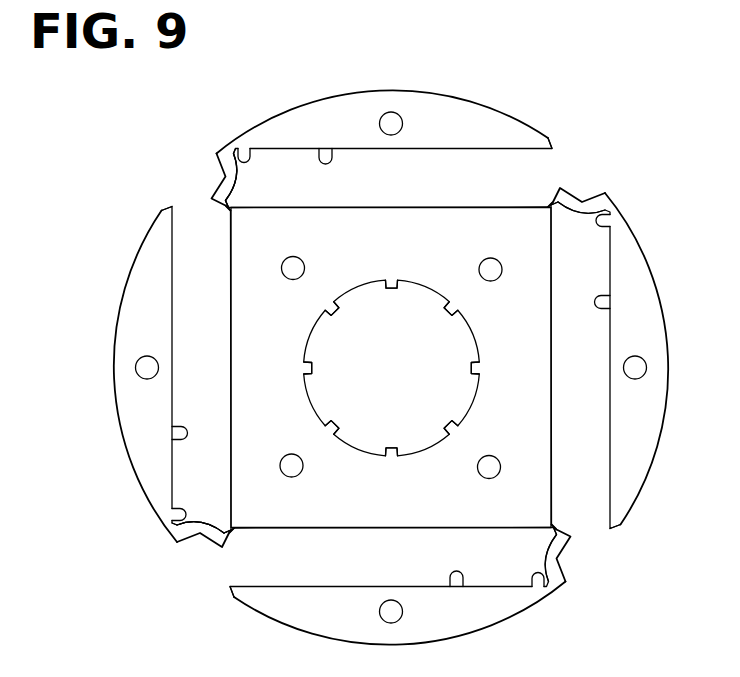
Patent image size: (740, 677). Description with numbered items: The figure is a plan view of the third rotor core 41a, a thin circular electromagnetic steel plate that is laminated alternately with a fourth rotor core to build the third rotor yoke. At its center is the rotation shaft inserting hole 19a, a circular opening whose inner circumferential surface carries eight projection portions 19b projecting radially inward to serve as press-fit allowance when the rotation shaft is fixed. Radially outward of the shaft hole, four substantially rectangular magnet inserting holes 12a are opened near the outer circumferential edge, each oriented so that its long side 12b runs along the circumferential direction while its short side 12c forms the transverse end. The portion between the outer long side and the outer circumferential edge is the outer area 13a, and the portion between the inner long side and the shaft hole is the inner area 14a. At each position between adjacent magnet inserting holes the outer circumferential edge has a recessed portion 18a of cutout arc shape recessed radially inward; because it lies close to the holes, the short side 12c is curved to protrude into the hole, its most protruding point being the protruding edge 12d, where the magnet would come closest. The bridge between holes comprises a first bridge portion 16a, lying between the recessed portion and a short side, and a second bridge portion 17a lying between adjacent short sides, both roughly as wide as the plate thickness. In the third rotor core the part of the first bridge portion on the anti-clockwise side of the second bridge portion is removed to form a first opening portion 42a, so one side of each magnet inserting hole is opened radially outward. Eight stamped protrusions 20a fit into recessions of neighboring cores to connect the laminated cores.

The third rotor core 41a is at (104, 139).
The magnet inserting hole 12a is at (412, 190).
The long side 12b is at (338, 207).
The short side 12c is at (246, 158).
The protruding edge 12d is at (245, 177).
The outer area 13a is at (305, 104).
The inner area 14a is at (532, 292).
The first bridge portion 16a is at (222, 167).
The second bridge portion 17a is at (231, 205).
The recessed portion 18a is at (208, 175).
The rotation shaft inserting hole 19a is at (416, 388).
The projection portion 19b is at (396, 289).
The protrusion 20a is at (399, 117).
The first opening portion 42a is at (553, 168).